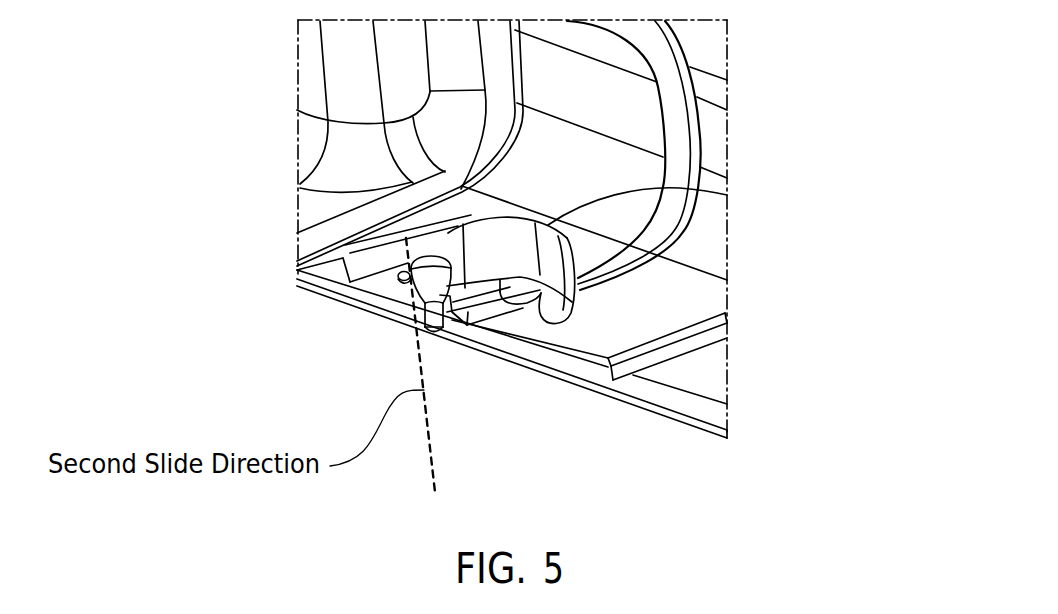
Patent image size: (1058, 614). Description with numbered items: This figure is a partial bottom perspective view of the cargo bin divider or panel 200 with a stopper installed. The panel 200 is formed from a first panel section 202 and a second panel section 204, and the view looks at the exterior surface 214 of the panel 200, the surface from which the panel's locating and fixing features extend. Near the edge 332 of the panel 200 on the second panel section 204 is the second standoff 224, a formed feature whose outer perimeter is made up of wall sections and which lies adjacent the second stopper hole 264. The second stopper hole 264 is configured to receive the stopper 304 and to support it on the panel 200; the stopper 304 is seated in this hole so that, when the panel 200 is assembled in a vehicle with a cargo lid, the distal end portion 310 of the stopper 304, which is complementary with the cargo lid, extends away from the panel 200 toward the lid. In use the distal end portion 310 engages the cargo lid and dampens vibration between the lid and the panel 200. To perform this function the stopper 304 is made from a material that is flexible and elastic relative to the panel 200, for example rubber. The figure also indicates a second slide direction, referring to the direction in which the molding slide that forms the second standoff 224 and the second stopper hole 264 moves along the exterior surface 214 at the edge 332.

The panel 200 is at (715, 90).
The first panel section 202 is at (713, 135).
The second panel section 204 is at (710, 352).
The exterior surface 214 is at (710, 393).
The second standoff 224 is at (523, 253).
The second stopper hole 264 is at (413, 286).
The stopper 304 is at (424, 312).
The distal end portion 310 is at (433, 332).
The edge 332 is at (591, 393).